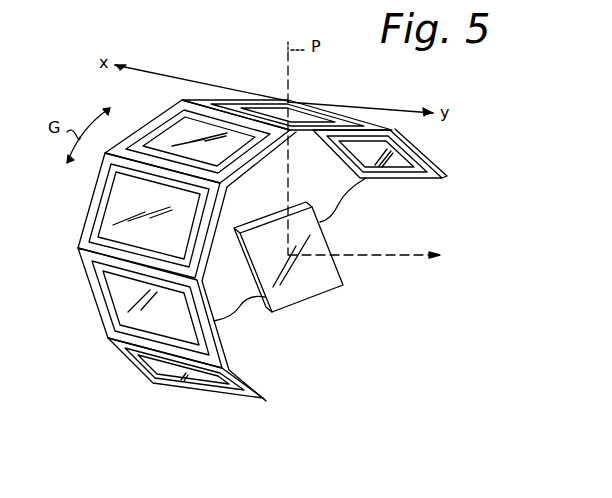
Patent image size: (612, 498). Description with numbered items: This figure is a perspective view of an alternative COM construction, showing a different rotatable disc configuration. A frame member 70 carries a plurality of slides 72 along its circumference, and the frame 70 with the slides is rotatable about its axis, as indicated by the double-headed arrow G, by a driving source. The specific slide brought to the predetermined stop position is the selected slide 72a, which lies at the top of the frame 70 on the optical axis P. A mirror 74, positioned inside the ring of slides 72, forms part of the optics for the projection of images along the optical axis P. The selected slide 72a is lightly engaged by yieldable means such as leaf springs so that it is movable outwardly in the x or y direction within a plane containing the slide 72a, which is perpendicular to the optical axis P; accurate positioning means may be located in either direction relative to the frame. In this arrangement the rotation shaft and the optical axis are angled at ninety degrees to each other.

The frame member 70 is at (163, 110).
The slides 72 is at (237, 133).
The selected slide 72a is at (311, 117).
The mirror 74 is at (328, 237).